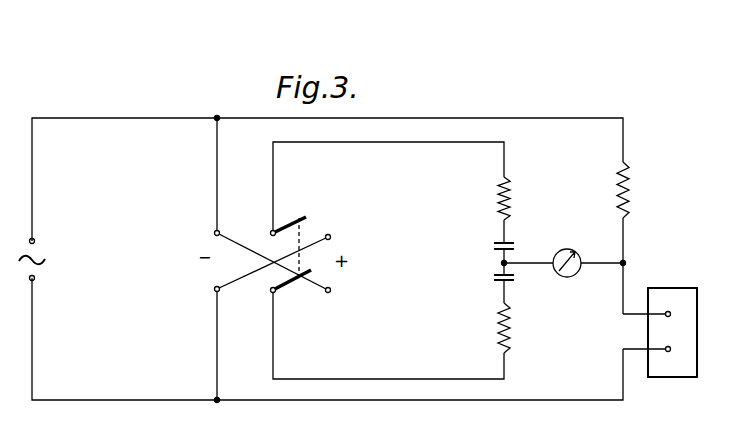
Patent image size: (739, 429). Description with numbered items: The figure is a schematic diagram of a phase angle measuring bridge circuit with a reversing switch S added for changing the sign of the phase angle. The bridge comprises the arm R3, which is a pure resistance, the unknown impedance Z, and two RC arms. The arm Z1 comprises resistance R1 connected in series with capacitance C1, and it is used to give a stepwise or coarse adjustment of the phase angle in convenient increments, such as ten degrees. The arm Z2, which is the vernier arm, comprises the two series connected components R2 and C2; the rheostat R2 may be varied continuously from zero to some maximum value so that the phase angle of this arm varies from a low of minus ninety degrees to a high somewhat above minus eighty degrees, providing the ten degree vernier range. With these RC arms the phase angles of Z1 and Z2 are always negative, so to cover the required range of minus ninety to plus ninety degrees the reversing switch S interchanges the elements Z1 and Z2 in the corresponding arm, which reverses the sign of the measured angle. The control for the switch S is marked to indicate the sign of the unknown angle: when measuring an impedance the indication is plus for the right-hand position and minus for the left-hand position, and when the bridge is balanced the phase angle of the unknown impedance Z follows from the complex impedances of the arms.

The reversing switch S is at (254, 229).
The resistance R1 is at (487, 212).
The rheostat R2 is at (525, 306).
The resistance R3 is at (602, 209).
The capacitance C1 is at (490, 263).
The capacitance C2 is at (489, 295).
The variable impedance arm Z1 is at (486, 180).
The vernier arm Z2 is at (486, 270).
The unknown impedance Z is at (660, 332).